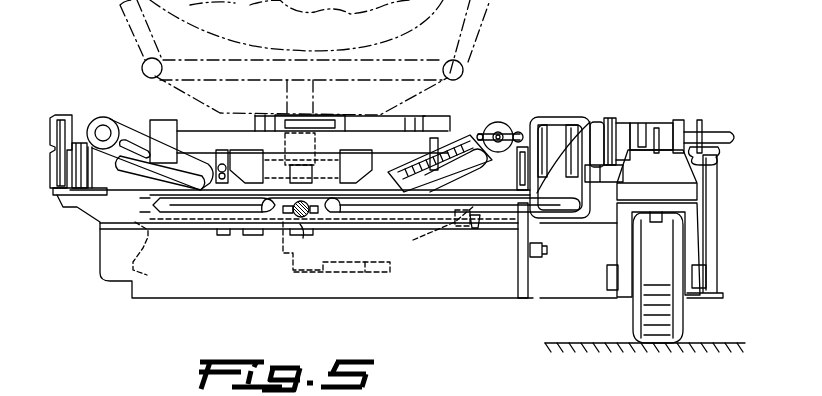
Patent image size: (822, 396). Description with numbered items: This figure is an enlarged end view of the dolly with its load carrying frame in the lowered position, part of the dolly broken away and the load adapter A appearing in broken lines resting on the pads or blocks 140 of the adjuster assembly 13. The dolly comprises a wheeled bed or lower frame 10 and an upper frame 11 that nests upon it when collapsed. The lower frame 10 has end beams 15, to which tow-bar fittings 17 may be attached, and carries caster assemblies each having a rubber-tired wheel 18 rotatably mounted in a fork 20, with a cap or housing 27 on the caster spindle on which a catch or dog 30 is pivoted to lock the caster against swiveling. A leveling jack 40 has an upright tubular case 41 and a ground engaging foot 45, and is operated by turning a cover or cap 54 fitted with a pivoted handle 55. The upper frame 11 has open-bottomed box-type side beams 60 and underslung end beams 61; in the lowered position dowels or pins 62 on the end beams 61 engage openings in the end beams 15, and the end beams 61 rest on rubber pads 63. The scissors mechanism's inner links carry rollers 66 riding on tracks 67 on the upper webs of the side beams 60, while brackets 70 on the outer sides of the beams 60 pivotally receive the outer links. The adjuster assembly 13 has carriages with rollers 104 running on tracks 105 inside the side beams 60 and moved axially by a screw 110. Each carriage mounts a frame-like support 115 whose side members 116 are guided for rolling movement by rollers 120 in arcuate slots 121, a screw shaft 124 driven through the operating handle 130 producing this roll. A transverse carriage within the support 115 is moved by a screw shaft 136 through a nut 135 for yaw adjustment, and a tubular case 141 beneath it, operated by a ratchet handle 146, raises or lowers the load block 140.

The adapter A is at (528, 22).
The lower frame 10 is at (530, 300).
The upper frame 11 is at (594, 93).
The adjuster assembly 13 is at (475, 106).
The end beam 15 is at (207, 260).
The brackets or fittings 17 is at (540, 270).
The rubber-tired wheel 18 is at (690, 336).
The fork 20 is at (690, 220).
The cap or housing 27 is at (680, 120).
The catch or dog 30 is at (655, 122).
The leveling jack 40 is at (726, 212).
The tubular case 41 is at (720, 181).
The ground engaging foot 45 is at (722, 298).
The cover or cap 54 is at (730, 133).
The pivoted handle 55 is at (722, 157).
The side beam 60 is at (592, 122).
The end beam 61 is at (247, 214).
The dowels or pins 62 is at (304, 240).
The pads 63 is at (232, 240).
The roller 66 is at (545, 125).
The track 67 is at (570, 125).
The bracket 70 is at (620, 126).
The rollers 104 is at (60, 165).
The tracks 105 is at (80, 187).
The screw 110 is at (300, 222).
The support 115 is at (400, 126).
The side members 116 is at (214, 150).
The rollers 120 is at (162, 160).
The arcuate slots 121 is at (130, 125).
The screw shaft 124 is at (476, 132).
The operating handle 130 is at (523, 132).
The nut 135 is at (312, 170).
The screw shaft 136 is at (268, 170).
The pad or block 140 is at (355, 95).
The tubular case 141 is at (330, 272).
The ratchet handle 146 is at (378, 272).